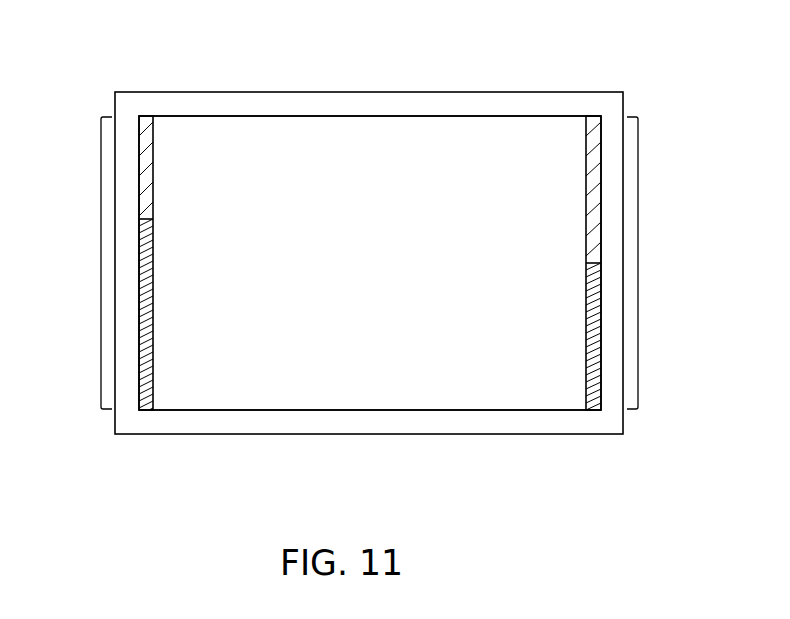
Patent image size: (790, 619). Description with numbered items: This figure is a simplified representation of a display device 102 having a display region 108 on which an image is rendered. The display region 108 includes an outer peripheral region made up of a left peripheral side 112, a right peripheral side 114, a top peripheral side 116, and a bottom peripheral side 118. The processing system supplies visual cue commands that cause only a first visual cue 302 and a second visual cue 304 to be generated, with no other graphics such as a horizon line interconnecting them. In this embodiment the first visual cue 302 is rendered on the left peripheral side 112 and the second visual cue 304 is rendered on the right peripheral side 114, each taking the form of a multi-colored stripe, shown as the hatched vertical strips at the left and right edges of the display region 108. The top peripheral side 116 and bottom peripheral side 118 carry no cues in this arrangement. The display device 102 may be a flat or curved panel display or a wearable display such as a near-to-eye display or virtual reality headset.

The display device 102 is at (537, 92).
The display region 108 is at (481, 140).
The left peripheral side 112 is at (153, 263).
The right peripheral side 114 is at (586, 311).
The top peripheral side 116 is at (369, 116).
The bottom peripheral side 118 is at (370, 410).
The first visual cue 302 is at (101, 260).
The second visual cue 304 is at (638, 268).